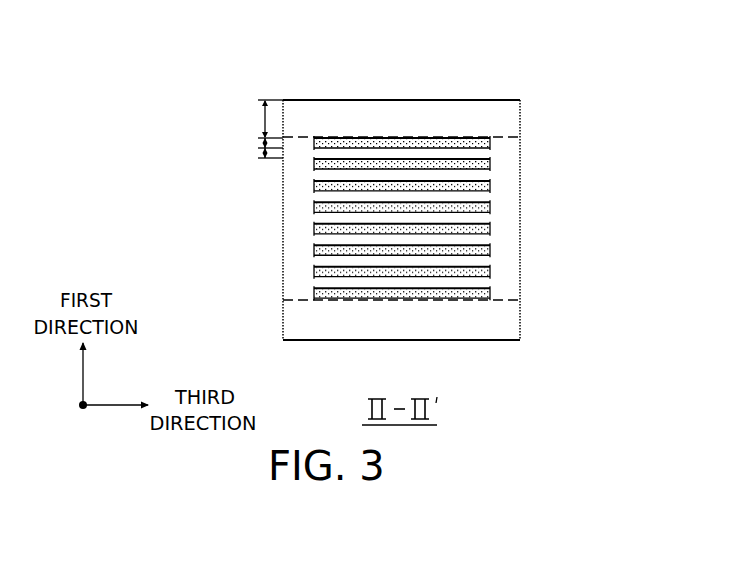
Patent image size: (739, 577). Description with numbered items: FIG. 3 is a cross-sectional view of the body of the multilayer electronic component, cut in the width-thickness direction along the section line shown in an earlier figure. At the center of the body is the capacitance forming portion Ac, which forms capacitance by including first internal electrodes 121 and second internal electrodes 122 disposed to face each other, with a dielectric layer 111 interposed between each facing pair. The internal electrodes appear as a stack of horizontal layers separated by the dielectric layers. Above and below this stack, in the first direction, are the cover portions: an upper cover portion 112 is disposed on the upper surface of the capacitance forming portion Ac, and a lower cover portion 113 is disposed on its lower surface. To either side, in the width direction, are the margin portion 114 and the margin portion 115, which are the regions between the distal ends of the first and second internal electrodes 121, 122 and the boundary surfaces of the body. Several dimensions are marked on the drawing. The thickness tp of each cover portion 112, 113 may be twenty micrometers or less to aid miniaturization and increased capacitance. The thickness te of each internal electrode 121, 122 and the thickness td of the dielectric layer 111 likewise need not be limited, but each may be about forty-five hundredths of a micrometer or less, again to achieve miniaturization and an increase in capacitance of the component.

The upper cover portion 112 is at (406, 115).
The lower cover portion 113 is at (515, 318).
The margin portion 114 is at (397, 202).
The margin portion 115 is at (515, 244).
The first internal electrode 121 is at (489, 140).
The dielectric layer 111 is at (489, 150).
The second internal electrode 122 is at (489, 159).
The capacitance forming portion Ac is at (312, 222).
The thickness of cover portion tp is at (261, 119).
The thickness of internal electrode te is at (260, 139).
The thickness of dielectric layer td is at (260, 158).